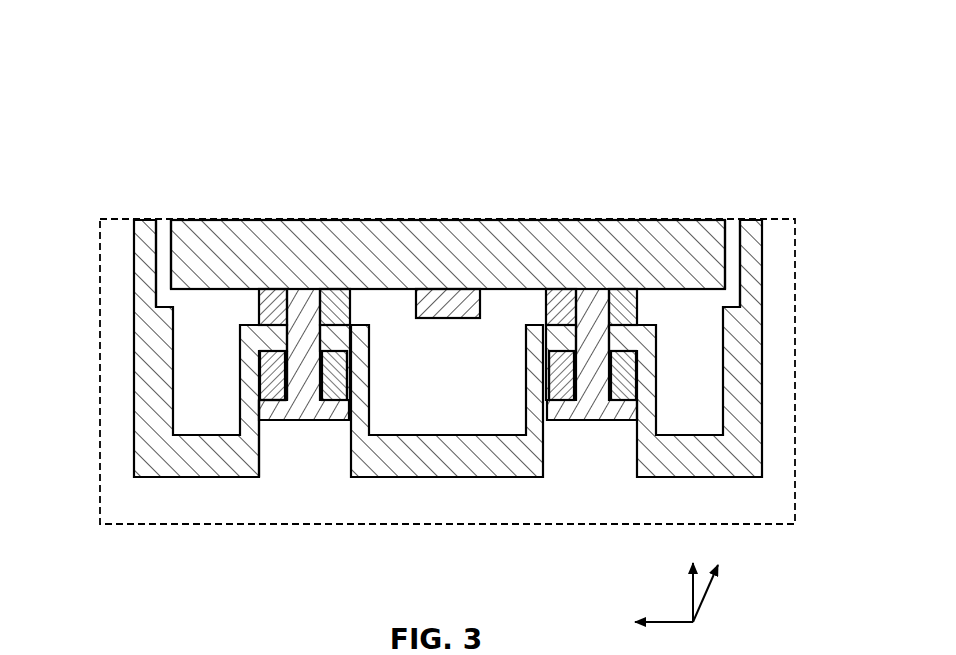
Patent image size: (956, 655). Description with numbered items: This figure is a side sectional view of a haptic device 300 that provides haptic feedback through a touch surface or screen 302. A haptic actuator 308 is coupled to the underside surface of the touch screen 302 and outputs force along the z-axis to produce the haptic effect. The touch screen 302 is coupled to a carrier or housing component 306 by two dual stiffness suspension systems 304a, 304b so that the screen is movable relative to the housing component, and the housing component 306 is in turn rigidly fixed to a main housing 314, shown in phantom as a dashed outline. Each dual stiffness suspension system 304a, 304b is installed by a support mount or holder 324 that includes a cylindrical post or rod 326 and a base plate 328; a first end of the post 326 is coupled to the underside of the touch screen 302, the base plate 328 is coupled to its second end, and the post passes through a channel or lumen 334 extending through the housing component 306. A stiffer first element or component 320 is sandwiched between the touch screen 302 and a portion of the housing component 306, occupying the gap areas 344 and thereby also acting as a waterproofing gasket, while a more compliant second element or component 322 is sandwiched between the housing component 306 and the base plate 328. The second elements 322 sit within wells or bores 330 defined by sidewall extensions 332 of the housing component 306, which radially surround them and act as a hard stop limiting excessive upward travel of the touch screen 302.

The haptic device 300 is at (125, 100).
The touch surface or screen 302 is at (507, 240).
The dual stiffness suspension system 304a is at (247, 304).
The dual stiffness suspension system 304b is at (647, 303).
The carrier or housing component 306 is at (147, 260).
The haptic actuator 308 is at (440, 300).
The main housing 314 is at (142, 525).
The first element or component 320 is at (262, 317).
The second element or component 322 is at (265, 369).
The support mount or holder 324 is at (285, 380).
The cylindrical post or rod 326 is at (268, 410).
The base plate 328 is at (264, 408).
The wells or bores 330 is at (285, 470).
The sidewall extensions 332 is at (258, 460).
The channel or lumen 334 is at (280, 337).
The gap areas 344 is at (163, 228).